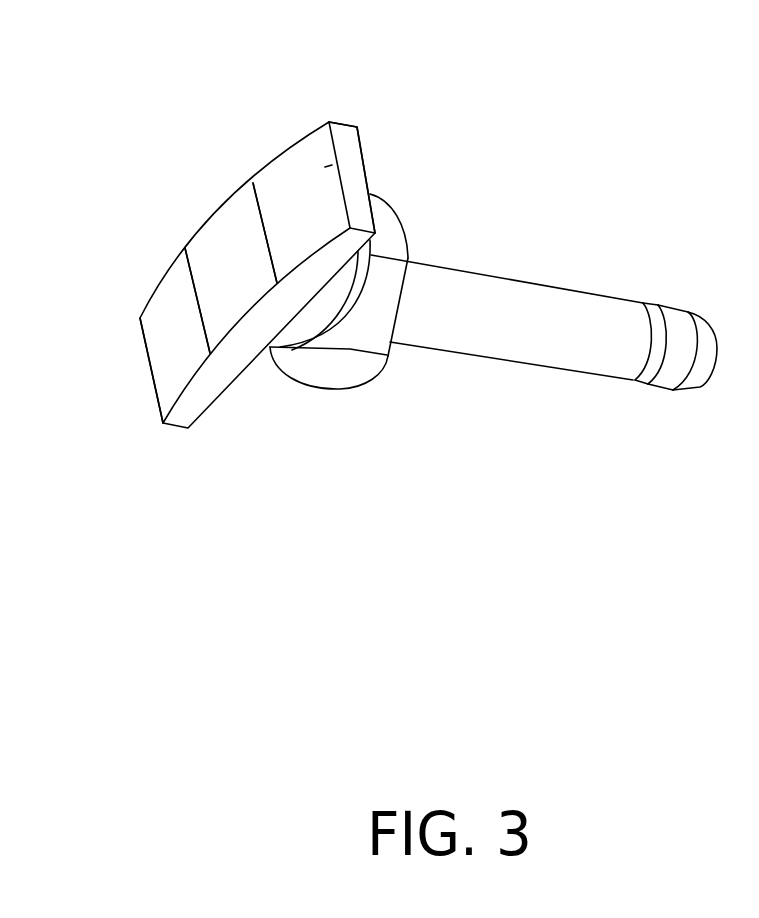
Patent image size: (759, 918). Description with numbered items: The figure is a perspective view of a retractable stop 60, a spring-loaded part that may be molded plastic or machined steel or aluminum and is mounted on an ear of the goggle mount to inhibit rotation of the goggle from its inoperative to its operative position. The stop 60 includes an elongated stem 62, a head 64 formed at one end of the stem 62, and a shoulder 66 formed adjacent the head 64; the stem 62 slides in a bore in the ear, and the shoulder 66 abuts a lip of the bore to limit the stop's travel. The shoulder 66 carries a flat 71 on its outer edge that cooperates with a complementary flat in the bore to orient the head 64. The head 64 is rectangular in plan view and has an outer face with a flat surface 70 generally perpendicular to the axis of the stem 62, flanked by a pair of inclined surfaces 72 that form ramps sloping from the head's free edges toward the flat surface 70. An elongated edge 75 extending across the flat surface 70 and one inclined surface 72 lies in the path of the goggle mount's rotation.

The stop 60 is at (361, 148).
The stem 62 is at (557, 308).
The head 64 is at (155, 393).
The shoulder 66 is at (400, 220).
The flat surface 70 is at (230, 228).
The flat 71 is at (368, 325).
The inclined surface 72 is at (307, 165).
The elongated edge 75 is at (178, 260).